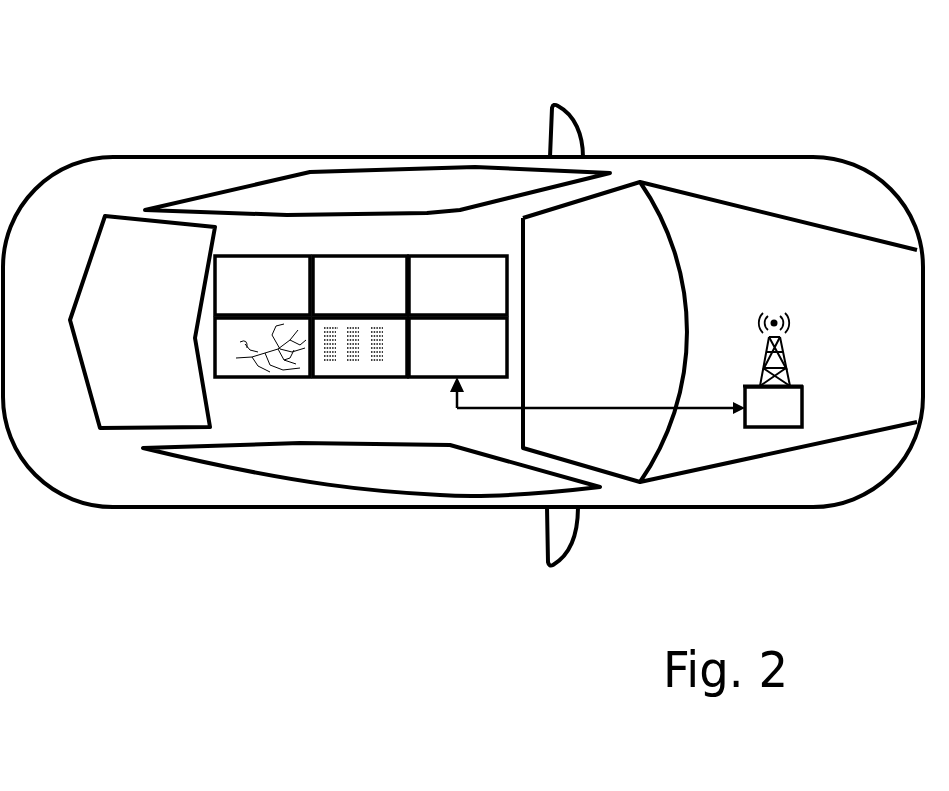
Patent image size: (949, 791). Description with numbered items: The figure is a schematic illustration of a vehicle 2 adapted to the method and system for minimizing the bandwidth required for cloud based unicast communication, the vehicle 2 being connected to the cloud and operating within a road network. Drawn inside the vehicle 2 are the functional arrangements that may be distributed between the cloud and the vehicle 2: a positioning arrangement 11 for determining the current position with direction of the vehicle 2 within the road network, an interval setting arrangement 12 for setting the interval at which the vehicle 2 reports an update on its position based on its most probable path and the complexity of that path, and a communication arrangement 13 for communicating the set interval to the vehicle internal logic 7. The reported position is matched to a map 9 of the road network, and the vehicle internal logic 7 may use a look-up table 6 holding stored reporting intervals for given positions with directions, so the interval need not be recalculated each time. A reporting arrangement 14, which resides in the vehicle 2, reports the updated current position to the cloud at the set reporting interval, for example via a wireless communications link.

The vehicle 2 is at (352, 128).
The positioning arrangement 11 is at (246, 303).
The interval setting arrangement 12 is at (341, 303).
The communication arrangement 13 is at (438, 303).
The map 9 is at (300, 378).
The look-up table 6 is at (385, 378).
The vehicle internal logic 7 is at (448, 363).
The reporting arrangement 14 is at (785, 408).